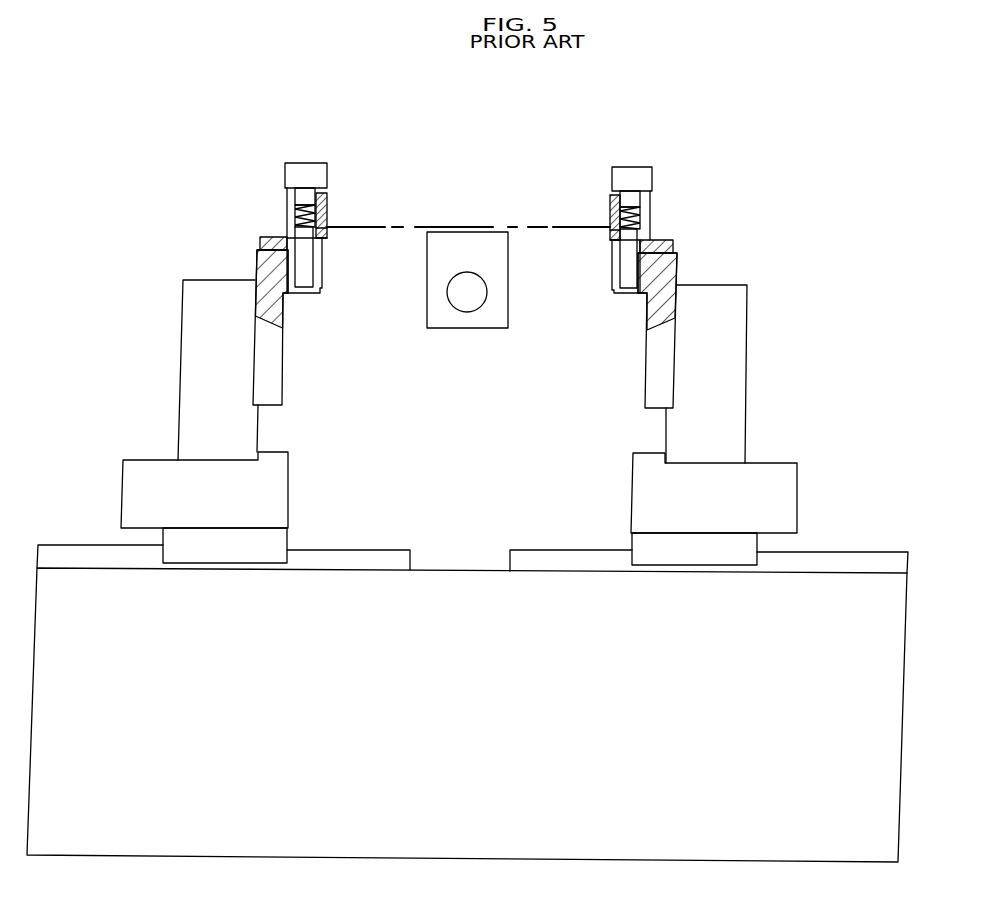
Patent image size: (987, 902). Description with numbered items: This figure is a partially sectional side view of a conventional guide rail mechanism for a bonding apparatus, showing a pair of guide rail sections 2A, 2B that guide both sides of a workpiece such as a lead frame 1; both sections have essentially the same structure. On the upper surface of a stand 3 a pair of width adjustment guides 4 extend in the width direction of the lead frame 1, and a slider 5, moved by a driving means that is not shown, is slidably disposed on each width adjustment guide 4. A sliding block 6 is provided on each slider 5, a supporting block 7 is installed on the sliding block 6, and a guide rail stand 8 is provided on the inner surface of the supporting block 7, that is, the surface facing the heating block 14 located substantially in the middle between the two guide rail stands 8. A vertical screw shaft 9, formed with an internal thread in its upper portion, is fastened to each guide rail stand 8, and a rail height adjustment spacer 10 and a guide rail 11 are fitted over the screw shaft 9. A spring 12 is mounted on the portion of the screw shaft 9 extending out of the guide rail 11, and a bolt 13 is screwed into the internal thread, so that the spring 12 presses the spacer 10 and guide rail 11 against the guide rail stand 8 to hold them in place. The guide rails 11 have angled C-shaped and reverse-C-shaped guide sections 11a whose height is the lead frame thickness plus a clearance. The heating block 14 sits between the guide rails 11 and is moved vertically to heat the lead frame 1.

The lead frame 1 is at (420, 226).
The guide rail section 2A is at (341, 181).
The guide rail section 2B is at (673, 179).
The stand 3 is at (887, 728).
The width adjustment guide 4 is at (385, 558).
The slider 5 is at (280, 545).
The sliding block 6 is at (133, 502).
The supporting block 7 is at (193, 383).
The guide rail stand 8 is at (270, 368).
The screw shaft 9 is at (307, 272).
The rail height adjustment spacer 10 is at (270, 245).
The guide rail 11 is at (328, 203).
The guide section 11a is at (327, 221).
The spring 12 is at (297, 212).
The bolt 13 is at (290, 177).
The heating block 14 is at (457, 323).